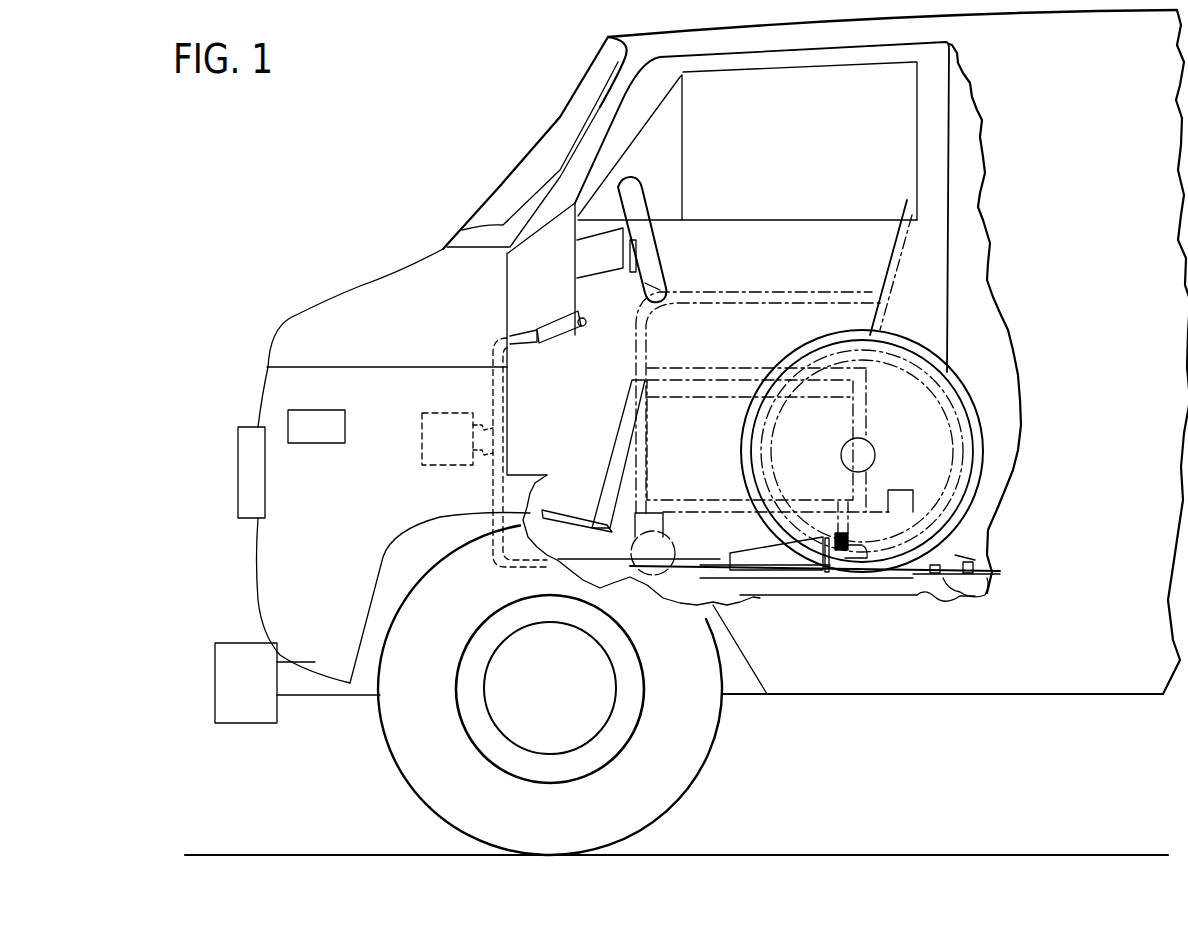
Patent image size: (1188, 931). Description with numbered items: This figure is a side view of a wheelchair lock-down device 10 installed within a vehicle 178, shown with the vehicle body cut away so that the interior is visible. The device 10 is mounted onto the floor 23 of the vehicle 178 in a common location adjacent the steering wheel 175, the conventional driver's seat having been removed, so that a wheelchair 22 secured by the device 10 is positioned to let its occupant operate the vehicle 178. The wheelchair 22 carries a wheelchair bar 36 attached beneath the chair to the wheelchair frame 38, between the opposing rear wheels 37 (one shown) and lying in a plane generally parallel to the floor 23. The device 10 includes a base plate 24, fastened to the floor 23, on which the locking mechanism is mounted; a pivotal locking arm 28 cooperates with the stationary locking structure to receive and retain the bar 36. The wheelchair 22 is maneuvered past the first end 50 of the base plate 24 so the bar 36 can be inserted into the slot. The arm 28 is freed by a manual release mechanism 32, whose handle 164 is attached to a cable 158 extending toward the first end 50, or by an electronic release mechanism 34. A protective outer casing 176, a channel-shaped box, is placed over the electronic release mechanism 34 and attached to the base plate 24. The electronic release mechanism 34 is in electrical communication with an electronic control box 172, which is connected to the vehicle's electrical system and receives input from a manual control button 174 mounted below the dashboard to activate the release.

The wheelchair lock-down device 10 is at (815, 624).
The wheelchair 22 is at (783, 378).
The floor 23 is at (776, 597).
The base plate 24 is at (943, 616).
The pivotal locking arm 28 is at (881, 517).
The manual release mechanism 32 is at (984, 573).
The electronic release mechanism 34 is at (700, 603).
The wheelchair bar 36 is at (834, 467).
The rear wheels 37 is at (865, 437).
The wheelchair frame 38 is at (887, 482).
The first end 50 is at (989, 598).
The cable 158 is at (1006, 530).
The handle 164 is at (999, 550).
The electronic control box 172 is at (411, 463).
The manual control button 174 is at (575, 313).
The steering wheel 175 is at (676, 218).
The protective outer casing 176 is at (828, 625).
The vehicle 178 is at (679, 432).